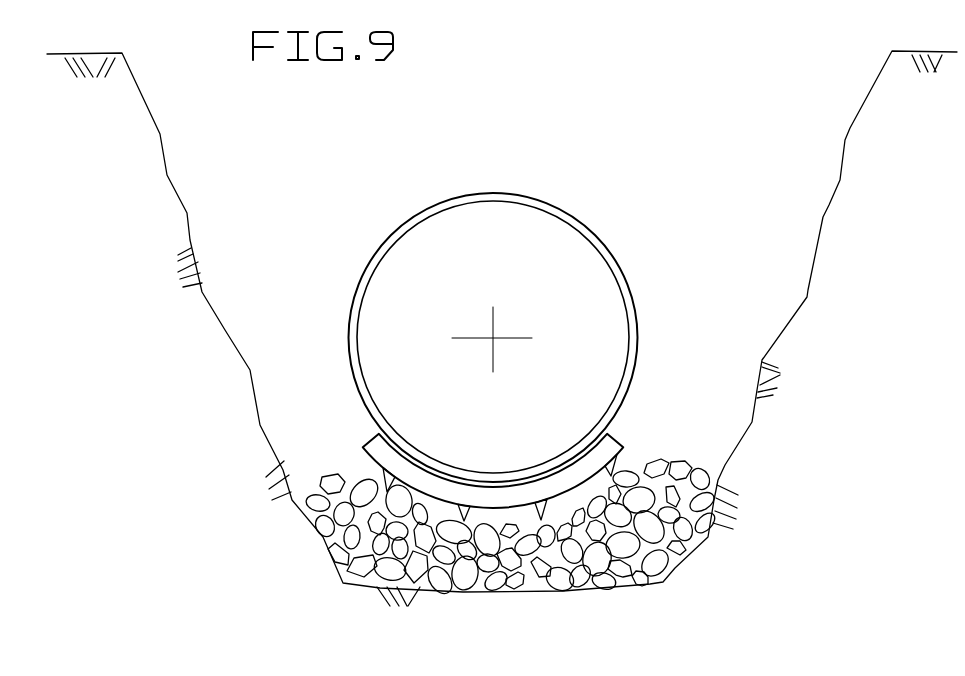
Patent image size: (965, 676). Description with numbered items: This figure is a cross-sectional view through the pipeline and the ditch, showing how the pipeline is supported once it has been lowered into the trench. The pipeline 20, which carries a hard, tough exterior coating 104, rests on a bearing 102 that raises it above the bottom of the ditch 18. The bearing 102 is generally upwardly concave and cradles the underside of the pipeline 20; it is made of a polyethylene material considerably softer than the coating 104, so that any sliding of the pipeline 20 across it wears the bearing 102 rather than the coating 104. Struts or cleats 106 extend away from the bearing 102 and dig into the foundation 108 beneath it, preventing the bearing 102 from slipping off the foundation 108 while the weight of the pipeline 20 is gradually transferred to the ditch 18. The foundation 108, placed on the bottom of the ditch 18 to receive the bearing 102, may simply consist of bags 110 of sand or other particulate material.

The ditch 18 is at (833, 192).
The pipeline 20 is at (606, 196).
The bearing 102 is at (374, 432).
The coating 104 is at (634, 398).
The struts or cleats 106 is at (540, 503).
The foundation 108 is at (672, 442).
The bags 110 is at (333, 477).